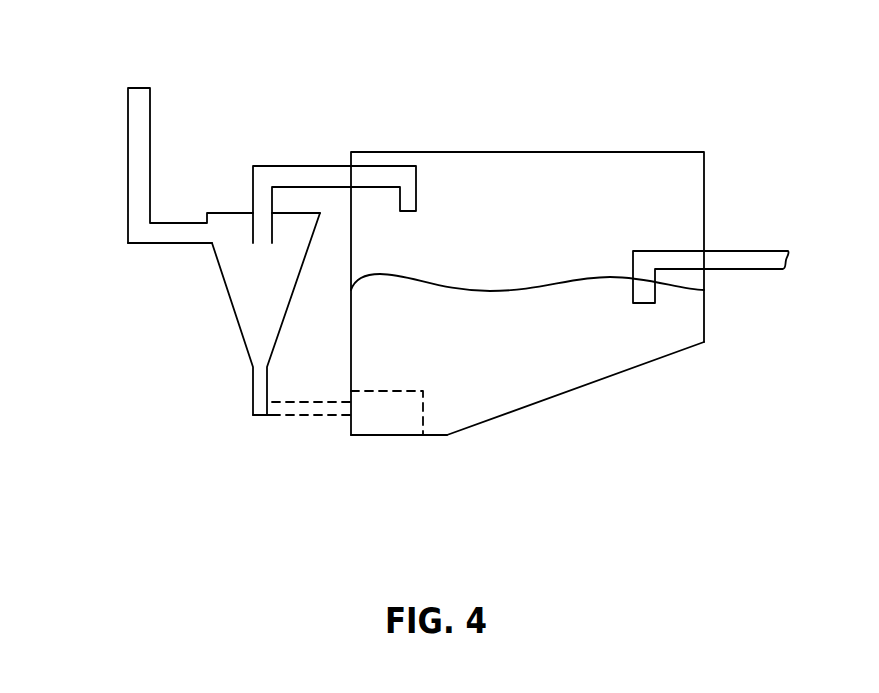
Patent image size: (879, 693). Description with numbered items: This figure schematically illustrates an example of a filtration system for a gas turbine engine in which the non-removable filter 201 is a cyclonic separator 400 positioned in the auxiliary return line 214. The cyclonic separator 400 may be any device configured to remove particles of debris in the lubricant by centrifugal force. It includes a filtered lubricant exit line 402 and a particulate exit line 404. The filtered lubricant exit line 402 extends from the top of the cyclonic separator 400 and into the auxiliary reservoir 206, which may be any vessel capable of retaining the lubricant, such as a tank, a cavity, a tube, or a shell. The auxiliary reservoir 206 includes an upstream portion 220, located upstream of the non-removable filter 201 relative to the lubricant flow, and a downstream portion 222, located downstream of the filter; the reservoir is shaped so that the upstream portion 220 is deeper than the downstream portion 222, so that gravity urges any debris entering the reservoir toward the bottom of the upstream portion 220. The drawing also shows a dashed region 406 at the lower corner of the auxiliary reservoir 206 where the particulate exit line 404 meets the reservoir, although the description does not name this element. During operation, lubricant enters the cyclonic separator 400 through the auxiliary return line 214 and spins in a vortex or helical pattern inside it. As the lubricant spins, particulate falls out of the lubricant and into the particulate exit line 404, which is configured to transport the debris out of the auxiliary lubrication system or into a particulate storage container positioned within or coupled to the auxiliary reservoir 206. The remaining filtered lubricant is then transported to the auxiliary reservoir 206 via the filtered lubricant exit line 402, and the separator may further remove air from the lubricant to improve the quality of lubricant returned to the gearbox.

The non-removable filter 201 is at (196, 283).
The auxiliary return line 214 is at (150, 102).
The filtered lubricant exit line 402 is at (288, 166).
The auxiliary reservoir 206 is at (507, 152).
The downstream portion 222 is at (660, 357).
The upstream portion 220 is at (440, 437).
The inlet opening 406 is at (380, 435).
The cyclonic separator 400 is at (240, 335).
The particulate exit line 404 is at (253, 400).